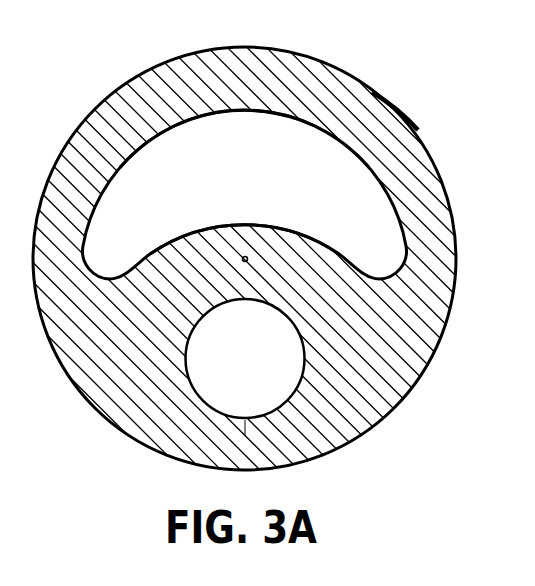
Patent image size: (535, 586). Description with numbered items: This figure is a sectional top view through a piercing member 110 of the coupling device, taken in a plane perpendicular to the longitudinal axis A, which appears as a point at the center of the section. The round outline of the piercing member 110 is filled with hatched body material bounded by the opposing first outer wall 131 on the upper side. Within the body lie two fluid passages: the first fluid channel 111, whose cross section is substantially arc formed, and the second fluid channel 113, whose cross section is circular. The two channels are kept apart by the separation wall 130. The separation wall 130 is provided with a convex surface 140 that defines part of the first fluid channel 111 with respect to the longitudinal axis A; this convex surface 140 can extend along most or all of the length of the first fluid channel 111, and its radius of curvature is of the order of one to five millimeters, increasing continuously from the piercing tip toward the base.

The housing body 110 is at (383, 98).
The first fluid channel 111 is at (265, 183).
The second fluid channel 113 is at (268, 377).
The separation wall 130 is at (168, 272).
The opposing first outer wall 131 is at (218, 70).
The convex surface 140 is at (300, 235).
The longitudinal axis A is at (247, 256).